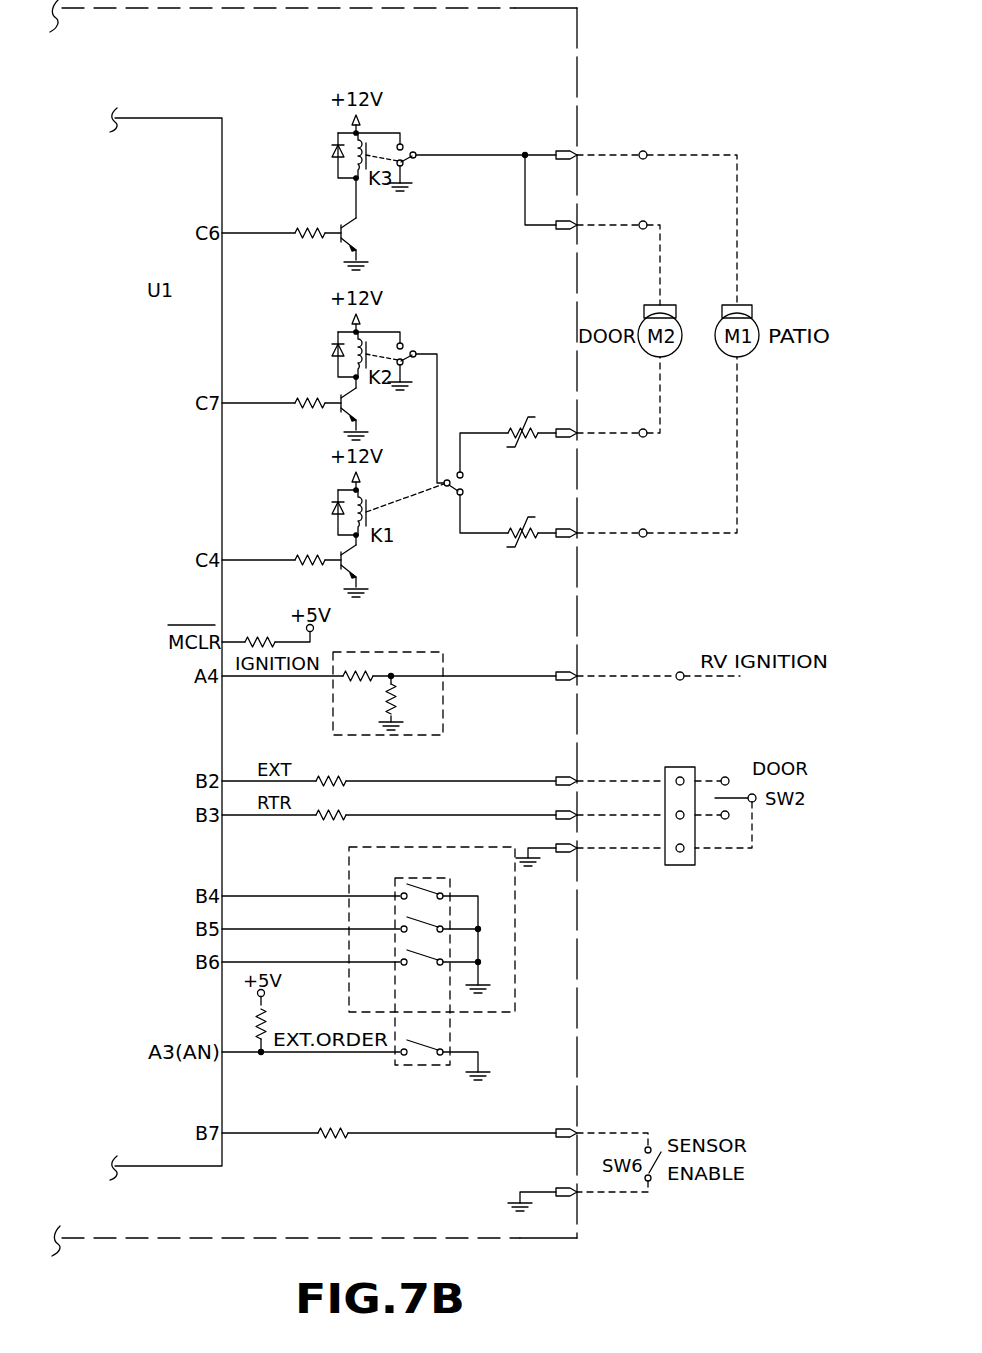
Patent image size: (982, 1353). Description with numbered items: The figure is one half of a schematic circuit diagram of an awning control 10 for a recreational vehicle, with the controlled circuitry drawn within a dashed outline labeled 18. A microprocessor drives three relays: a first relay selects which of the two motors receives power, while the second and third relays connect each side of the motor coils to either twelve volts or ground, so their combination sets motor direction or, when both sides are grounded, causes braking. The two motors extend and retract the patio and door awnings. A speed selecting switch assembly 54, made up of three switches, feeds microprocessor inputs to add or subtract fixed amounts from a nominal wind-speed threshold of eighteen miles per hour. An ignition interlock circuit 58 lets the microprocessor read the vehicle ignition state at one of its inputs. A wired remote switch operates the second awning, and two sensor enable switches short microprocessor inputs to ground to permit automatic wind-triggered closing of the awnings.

The awning system 10 is at (638, 110).
The controller housing 18 is at (577, 57).
The speed selecting switch assembly 54 is at (515, 932).
The ignition interlock circuit 58 is at (413, 652).